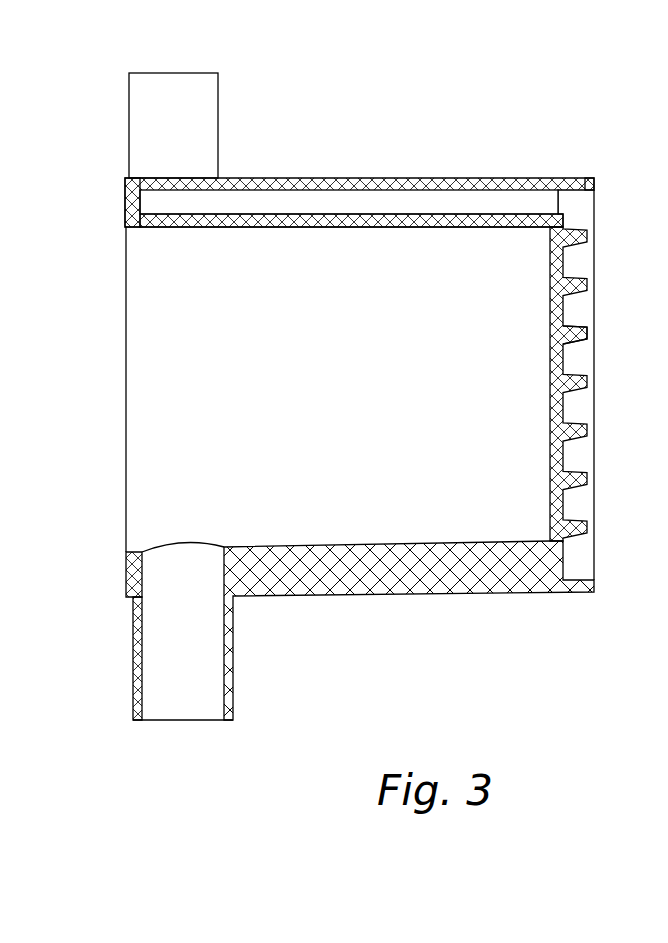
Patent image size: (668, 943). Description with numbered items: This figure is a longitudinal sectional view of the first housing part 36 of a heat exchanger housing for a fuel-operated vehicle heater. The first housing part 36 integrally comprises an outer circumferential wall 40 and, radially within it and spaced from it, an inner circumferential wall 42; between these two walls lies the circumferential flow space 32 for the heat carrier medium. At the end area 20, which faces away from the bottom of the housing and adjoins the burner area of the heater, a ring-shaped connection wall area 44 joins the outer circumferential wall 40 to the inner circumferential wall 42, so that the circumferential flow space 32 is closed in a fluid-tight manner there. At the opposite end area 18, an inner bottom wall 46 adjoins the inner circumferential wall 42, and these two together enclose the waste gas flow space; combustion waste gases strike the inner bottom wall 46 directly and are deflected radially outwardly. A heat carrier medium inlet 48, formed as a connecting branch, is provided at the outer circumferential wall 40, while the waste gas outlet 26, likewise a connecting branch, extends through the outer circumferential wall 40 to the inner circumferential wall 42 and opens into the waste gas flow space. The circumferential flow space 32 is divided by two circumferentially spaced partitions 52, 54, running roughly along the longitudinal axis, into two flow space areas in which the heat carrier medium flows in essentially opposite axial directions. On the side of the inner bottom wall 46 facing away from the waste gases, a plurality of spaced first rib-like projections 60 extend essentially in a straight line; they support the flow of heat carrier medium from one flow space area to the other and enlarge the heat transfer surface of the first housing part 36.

The end area 18 is at (352, 402).
The end area 20 is at (127, 568).
The waste gas outlet 26 is at (130, 655).
The circumferential flow space 32 is at (268, 202).
The first housing part 36 is at (120, 382).
The outer circumferential wall 40 is at (349, 203).
The inner circumferential wall 42 is at (363, 220).
The connection wall area 44 is at (125, 205).
The inner bottom wall 46 is at (566, 384).
The heat carrier medium inlet 48 is at (129, 113).
The partition 52 is at (563, 202).
The partition 54 is at (505, 572).
The first rib-like projections 60 is at (573, 327).